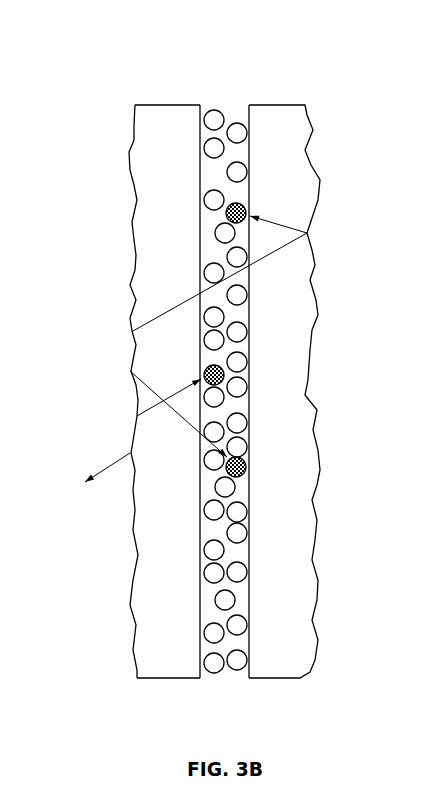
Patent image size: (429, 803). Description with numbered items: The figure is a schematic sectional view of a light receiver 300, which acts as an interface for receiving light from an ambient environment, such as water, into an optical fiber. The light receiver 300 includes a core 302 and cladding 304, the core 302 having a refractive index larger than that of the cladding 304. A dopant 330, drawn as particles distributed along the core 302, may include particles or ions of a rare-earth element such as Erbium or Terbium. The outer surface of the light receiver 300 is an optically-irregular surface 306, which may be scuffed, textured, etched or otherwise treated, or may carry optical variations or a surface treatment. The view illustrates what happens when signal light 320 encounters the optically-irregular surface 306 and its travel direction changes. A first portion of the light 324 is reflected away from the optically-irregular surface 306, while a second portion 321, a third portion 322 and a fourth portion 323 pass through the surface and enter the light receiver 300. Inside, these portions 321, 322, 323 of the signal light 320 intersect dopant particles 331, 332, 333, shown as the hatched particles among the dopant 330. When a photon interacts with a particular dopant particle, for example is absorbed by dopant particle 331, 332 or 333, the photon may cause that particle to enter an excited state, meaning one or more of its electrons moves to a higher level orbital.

The light receiver 300 is at (322, 62).
The core 302 is at (202, 105).
The cladding 304 is at (152, 105).
The optically-irregular surface 306 is at (133, 224).
The signal light 320 is at (78, 285).
The second portion of the light 321 is at (133, 331).
The third portion of the light 322 is at (130, 371).
The fourth portion of the light 323 is at (137, 416).
The first portion of the light 324 is at (130, 455).
The dopant 330 is at (204, 150).
The dopant particle 331 is at (253, 210).
The dopant particle 332 is at (204, 371).
The dopant particle 333 is at (246, 474).